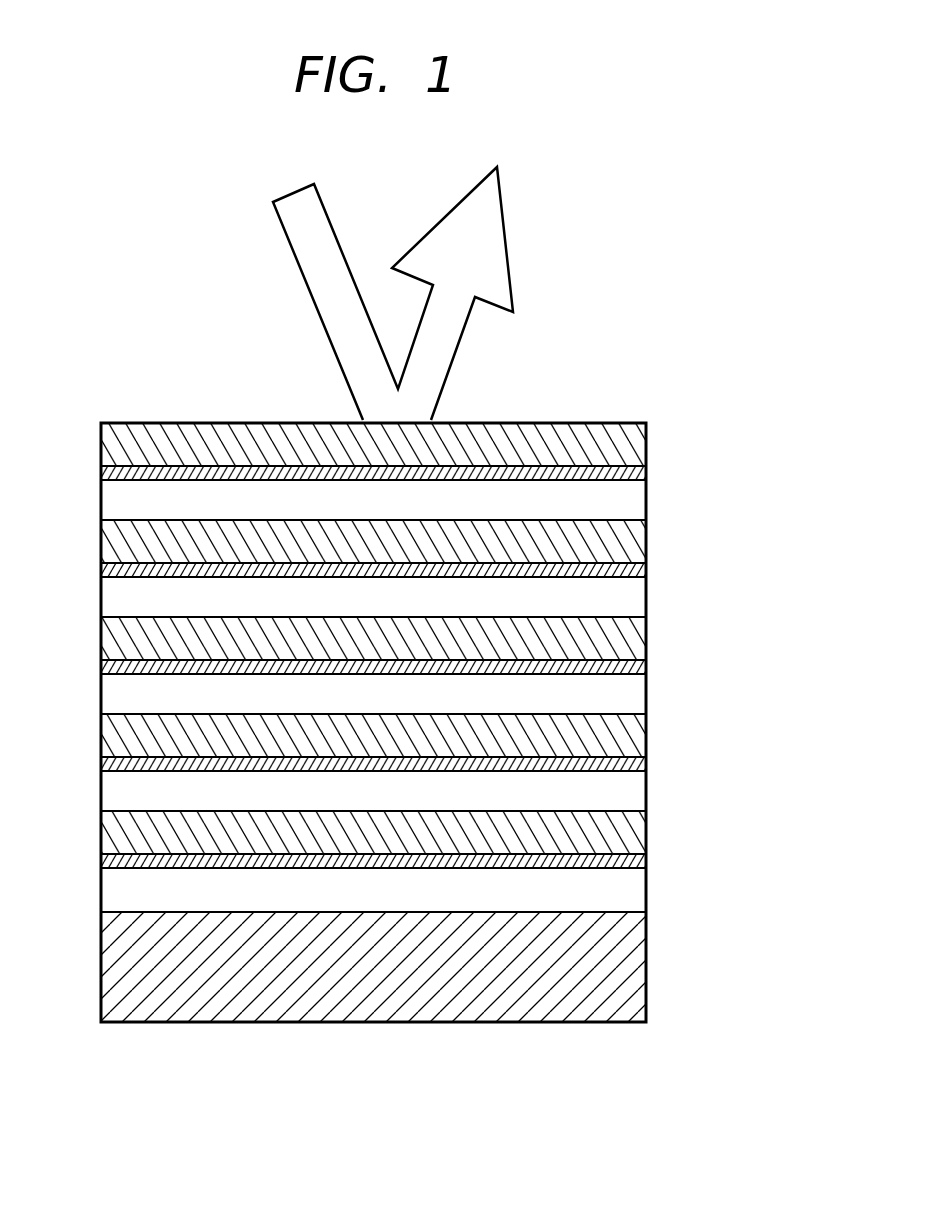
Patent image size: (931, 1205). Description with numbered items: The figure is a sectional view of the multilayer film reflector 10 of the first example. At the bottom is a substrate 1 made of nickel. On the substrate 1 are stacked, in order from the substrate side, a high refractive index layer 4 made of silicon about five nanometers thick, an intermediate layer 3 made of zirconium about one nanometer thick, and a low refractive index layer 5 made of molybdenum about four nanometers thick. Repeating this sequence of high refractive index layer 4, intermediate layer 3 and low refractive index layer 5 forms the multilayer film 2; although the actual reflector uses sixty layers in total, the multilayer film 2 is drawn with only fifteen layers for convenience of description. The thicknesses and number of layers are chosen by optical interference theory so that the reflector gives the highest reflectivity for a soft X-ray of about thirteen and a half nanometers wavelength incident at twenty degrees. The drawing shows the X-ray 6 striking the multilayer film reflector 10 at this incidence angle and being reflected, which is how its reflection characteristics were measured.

The substrate 1 is at (602, 978).
The multilayer film 2 is at (384, 667).
The intermediate layer 3 is at (642, 665).
The high refractive index layer 4 is at (630, 700).
The low refractive index layer 5 is at (630, 645).
The X-ray 6 is at (488, 262).
The multilayer film reflector 10 is at (416, 716).